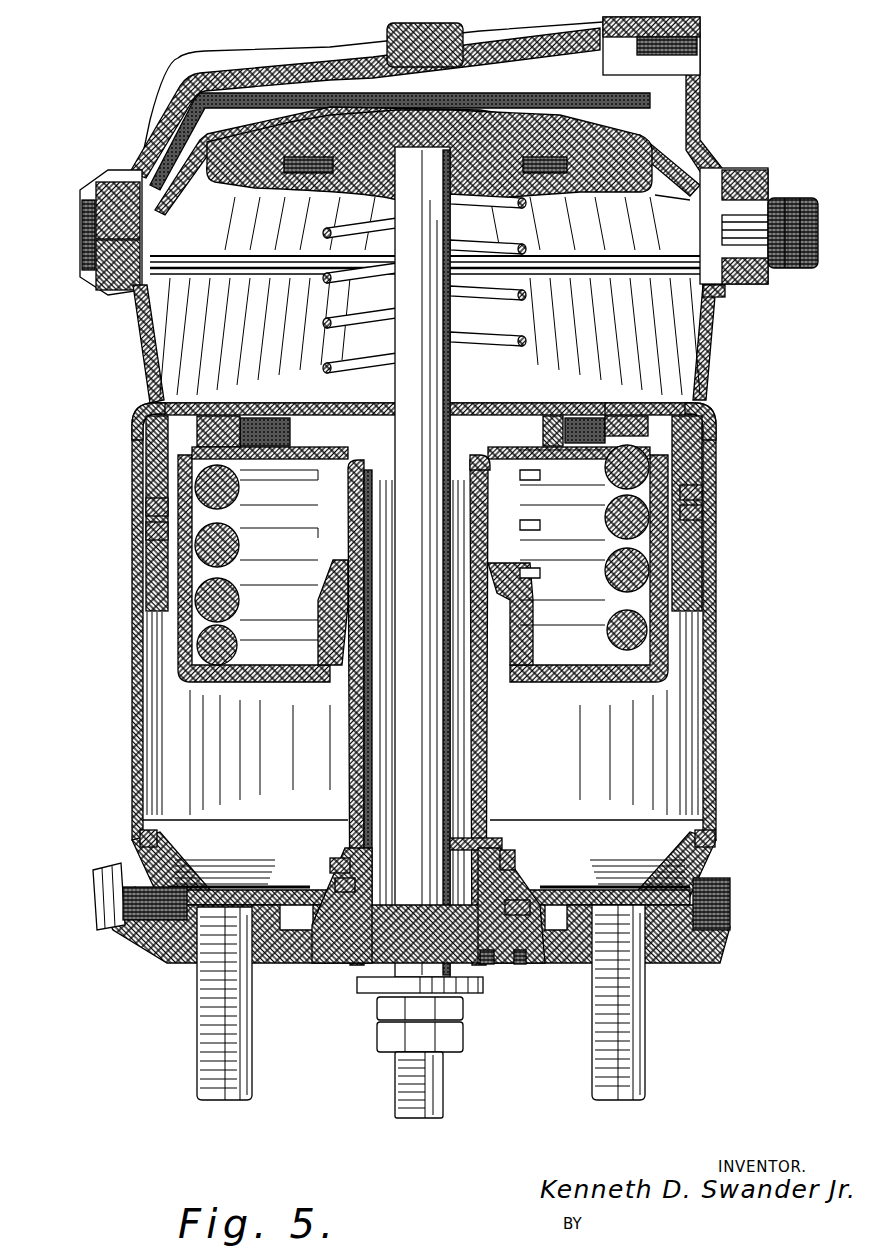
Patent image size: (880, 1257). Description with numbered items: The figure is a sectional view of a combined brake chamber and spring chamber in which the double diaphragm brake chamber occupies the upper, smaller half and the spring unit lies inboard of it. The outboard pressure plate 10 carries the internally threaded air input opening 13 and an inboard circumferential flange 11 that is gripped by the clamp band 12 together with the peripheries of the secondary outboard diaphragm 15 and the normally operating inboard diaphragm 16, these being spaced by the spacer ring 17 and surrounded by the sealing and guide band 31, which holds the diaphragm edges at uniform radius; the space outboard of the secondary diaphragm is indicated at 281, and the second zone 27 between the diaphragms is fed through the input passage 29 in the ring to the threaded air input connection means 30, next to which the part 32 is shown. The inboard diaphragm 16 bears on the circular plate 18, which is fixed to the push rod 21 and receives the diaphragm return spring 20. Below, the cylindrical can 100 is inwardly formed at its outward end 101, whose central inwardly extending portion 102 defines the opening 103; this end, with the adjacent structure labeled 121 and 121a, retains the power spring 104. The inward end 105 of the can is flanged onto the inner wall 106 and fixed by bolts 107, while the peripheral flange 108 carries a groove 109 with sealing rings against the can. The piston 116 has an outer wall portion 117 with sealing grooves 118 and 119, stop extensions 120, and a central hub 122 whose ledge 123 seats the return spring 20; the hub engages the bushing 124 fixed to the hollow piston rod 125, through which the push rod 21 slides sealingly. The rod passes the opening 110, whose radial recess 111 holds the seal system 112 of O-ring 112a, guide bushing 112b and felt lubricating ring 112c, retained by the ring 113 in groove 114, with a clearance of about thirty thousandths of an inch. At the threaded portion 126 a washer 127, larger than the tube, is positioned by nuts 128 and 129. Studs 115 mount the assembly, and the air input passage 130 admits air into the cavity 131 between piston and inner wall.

The boss 281 is at (415, 77).
The air input opening 13 is at (700, 50).
The outboard pressure plate 10 is at (688, 87).
The outboard secondary diaphragm 15 is at (687, 157).
The inboard circumferential flange 11 is at (727, 180).
The input passage 29 is at (750, 187).
The air input connection means 30 is at (793, 200).
The seal 32 is at (757, 273).
The clamp band 12 is at (727, 298).
The inboard diaphragm 16 is at (683, 210).
The diaphragm return spring 20 is at (520, 250).
The circular pad or plate 18 is at (243, 185).
The second zone 27 is at (155, 234).
The spacer ring 17 is at (97, 237).
The sealing and guide band 31 is at (93, 257).
The push rod 21 is at (408, 294).
The outward end of can 101 is at (150, 403).
The housing corner 121a is at (130, 420).
The opening 103 is at (533, 403).
The central inwardly extending portion 102 is at (555, 403).
The top plate 121 is at (583, 403).
The extensions 120 is at (674, 403).
The outer greater diameter wall portion 117 is at (690, 468).
The groove 118 is at (713, 492).
The groove 119 is at (710, 523).
The cylindrical can 100 is at (716, 653).
The cavity 131 is at (660, 752).
The power spring 104 is at (222, 535).
The push rod bushing 124 is at (492, 457).
The shelf or ledge 123 is at (528, 560).
The central hub 122 is at (518, 620).
The piston 116 is at (583, 678).
The hollow piston rod 125 is at (478, 705).
The opening 110 is at (486, 822).
The radial recess 111 is at (512, 858).
The seal system 112 is at (520, 880).
The O-ring seal 112a is at (330, 862).
The guide bushing 112b is at (515, 912).
The felt lubricating ring 112c is at (333, 885).
The inner wall portion 106 is at (286, 880).
The peripheral flange 108 is at (160, 858).
The groove 109 is at (138, 838).
The screws or bolts 107 is at (93, 886).
The inward end of can 105 is at (118, 937).
The studs 115 is at (207, 994).
The washer 127 is at (358, 988).
The ring 113 is at (487, 965).
The groove 114 is at (520, 965).
The nut 128 is at (464, 1010).
The nut 129 is at (464, 1040).
The threaded portion 126 is at (455, 1092).
The air input passage 130 is at (732, 890).